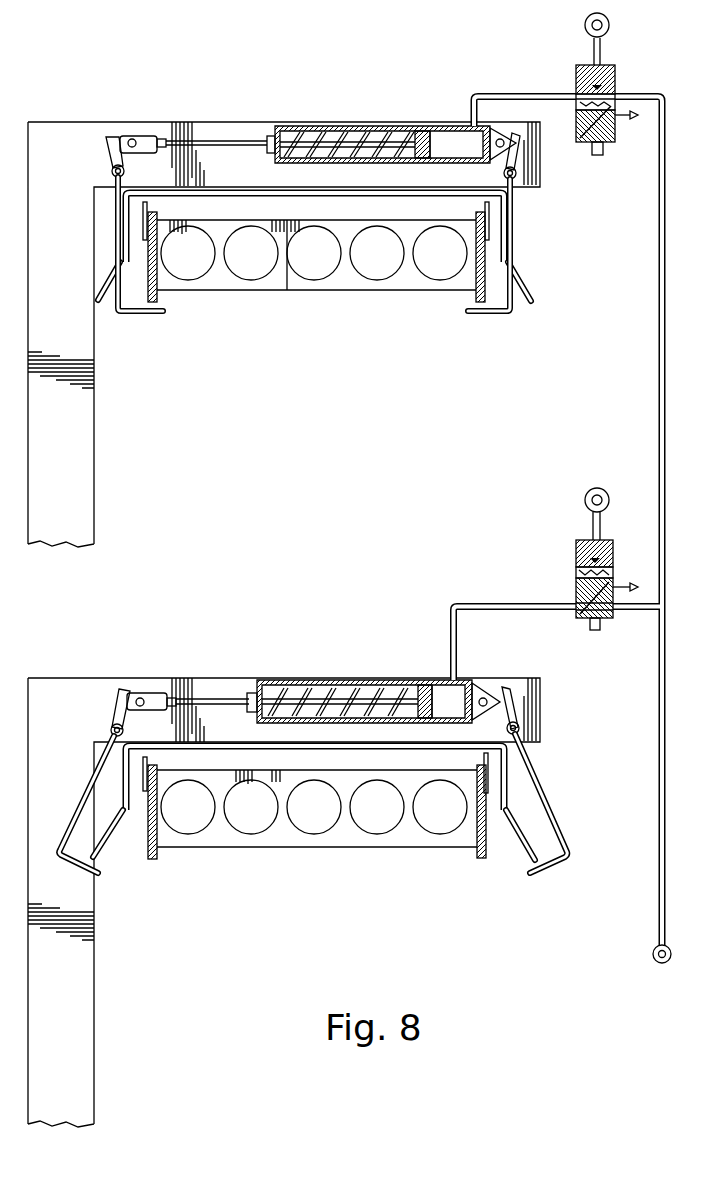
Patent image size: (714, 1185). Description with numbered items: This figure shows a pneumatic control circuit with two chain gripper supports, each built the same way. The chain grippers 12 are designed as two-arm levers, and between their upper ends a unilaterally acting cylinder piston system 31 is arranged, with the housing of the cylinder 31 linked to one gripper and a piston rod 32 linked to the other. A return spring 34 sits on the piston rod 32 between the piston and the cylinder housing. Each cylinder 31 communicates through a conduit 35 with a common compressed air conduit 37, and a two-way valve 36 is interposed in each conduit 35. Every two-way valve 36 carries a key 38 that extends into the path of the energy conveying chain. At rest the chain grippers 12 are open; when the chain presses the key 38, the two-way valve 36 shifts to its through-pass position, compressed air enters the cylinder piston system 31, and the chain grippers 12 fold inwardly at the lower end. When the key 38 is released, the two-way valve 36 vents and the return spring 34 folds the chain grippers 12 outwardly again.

The chain gripper 12 is at (116, 229).
The cylinder piston system 31 is at (398, 126).
The piston rod 32 is at (194, 141).
The return spring 34 is at (322, 127).
The conduit 35 is at (497, 605).
The two-way valve 36 is at (607, 143).
The compressed air conduit 37 is at (659, 390).
The key 38 is at (585, 27).